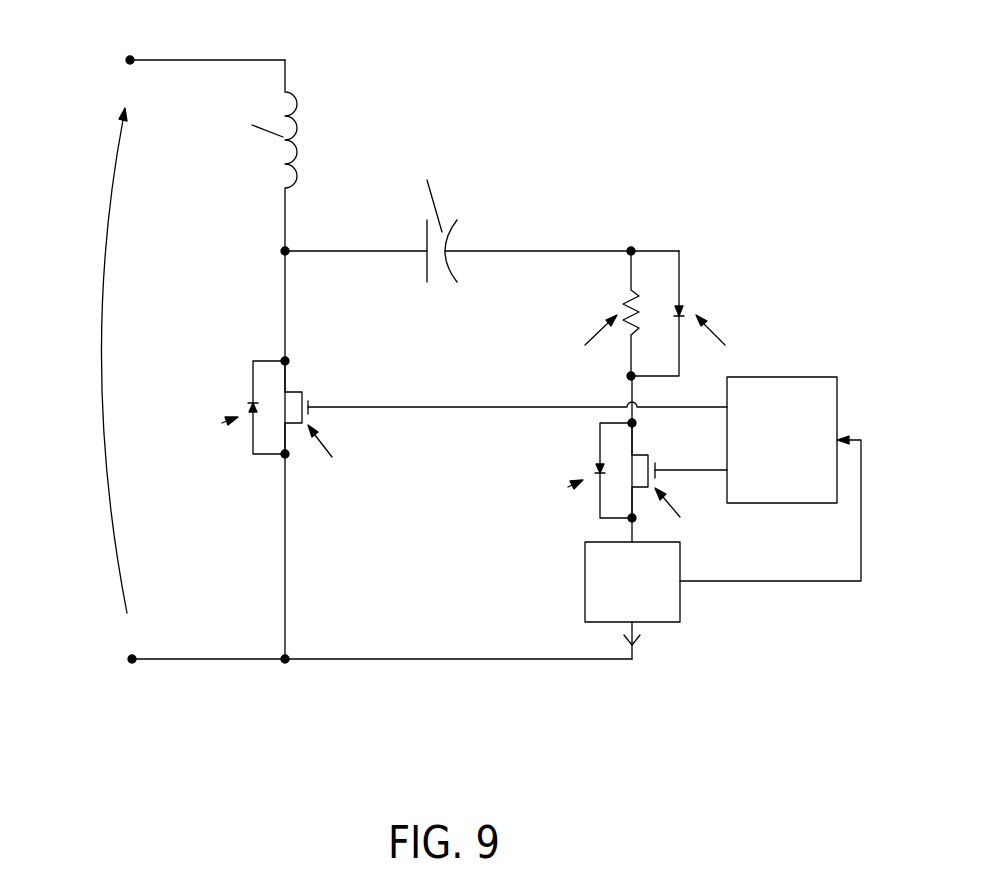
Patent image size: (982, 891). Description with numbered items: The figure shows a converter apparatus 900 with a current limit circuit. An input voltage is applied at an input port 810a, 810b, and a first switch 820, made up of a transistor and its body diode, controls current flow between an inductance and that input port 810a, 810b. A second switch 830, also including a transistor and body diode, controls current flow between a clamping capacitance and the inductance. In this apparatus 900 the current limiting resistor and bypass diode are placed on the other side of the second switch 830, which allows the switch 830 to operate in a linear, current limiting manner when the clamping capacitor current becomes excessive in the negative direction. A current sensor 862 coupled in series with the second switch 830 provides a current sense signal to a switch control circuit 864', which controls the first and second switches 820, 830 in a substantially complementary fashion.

The converter apparatus 900 is at (655, 110).
The input port 810a is at (127, 58).
The input port 810b is at (129, 657).
The first switch 820 is at (238, 447).
The second switch 830 is at (552, 462).
The current sensor 862 is at (585, 582).
The switch control circuit 864' is at (775, 460).